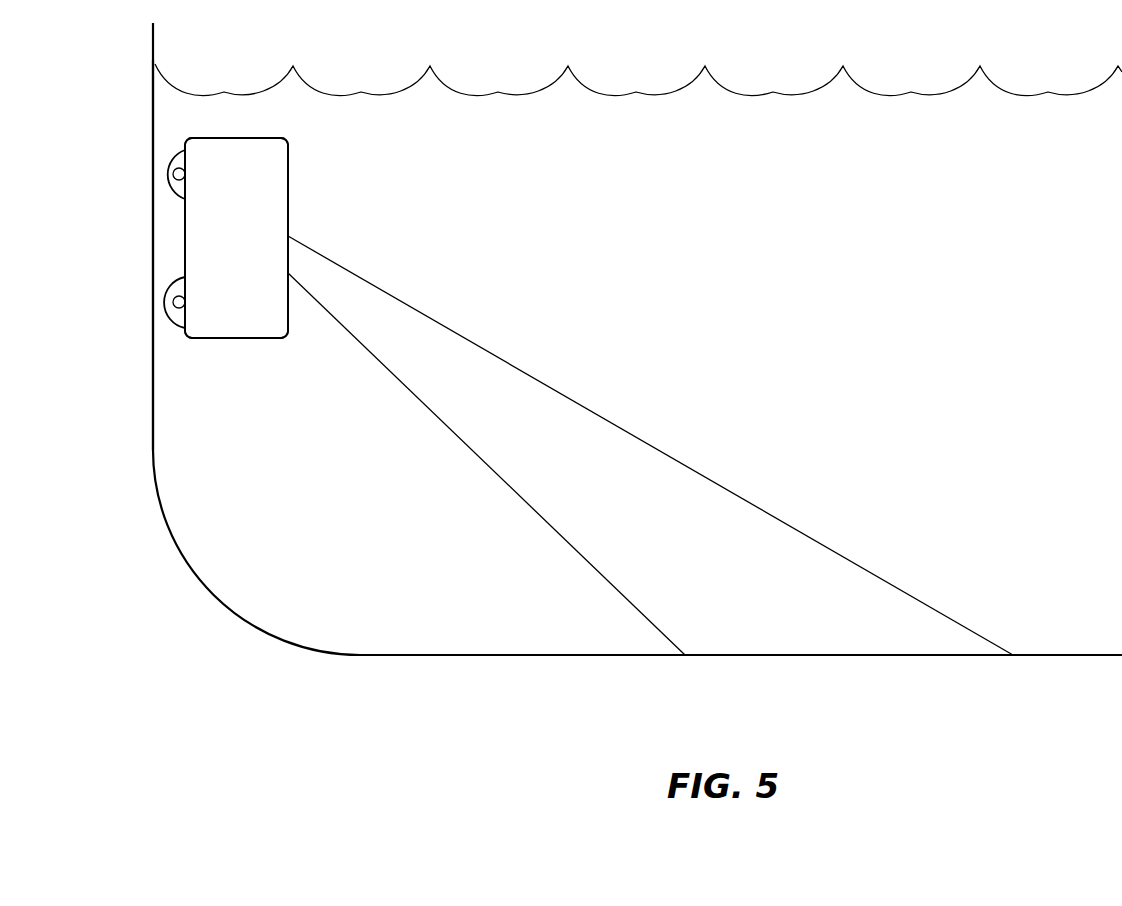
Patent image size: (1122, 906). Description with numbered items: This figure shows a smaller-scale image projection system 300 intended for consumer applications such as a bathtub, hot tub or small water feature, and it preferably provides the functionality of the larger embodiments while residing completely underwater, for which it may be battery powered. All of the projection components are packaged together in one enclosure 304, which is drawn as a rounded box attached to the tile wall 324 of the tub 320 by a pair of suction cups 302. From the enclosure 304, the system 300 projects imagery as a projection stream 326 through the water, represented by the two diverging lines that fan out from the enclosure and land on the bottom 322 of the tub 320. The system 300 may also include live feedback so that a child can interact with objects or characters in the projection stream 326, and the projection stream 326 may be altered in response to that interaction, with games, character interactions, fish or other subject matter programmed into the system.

The image projection system 300 is at (257, 253).
The suction cups 302 is at (164, 173).
The enclosure 304 is at (289, 163).
The tub 320 is at (165, 520).
The bottom of the tub 322 is at (453, 656).
The tile wall 324 is at (153, 386).
The projection stream 326 is at (676, 534).